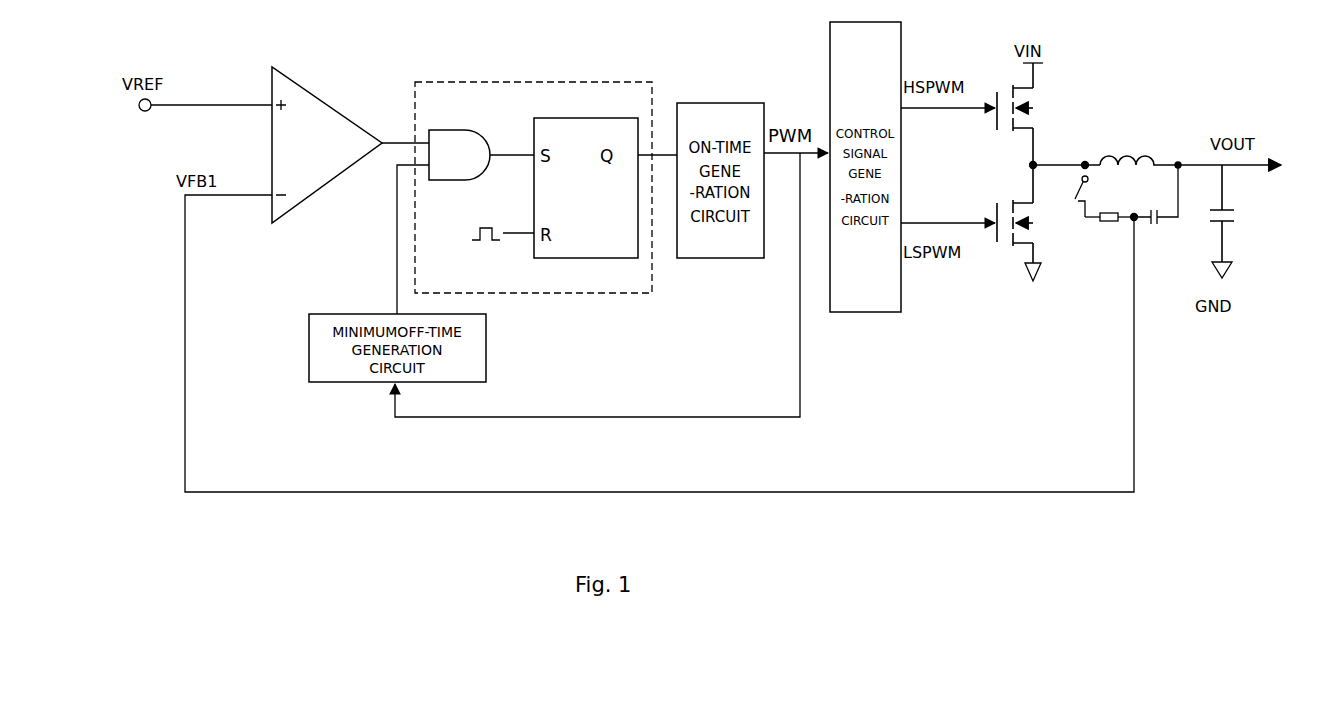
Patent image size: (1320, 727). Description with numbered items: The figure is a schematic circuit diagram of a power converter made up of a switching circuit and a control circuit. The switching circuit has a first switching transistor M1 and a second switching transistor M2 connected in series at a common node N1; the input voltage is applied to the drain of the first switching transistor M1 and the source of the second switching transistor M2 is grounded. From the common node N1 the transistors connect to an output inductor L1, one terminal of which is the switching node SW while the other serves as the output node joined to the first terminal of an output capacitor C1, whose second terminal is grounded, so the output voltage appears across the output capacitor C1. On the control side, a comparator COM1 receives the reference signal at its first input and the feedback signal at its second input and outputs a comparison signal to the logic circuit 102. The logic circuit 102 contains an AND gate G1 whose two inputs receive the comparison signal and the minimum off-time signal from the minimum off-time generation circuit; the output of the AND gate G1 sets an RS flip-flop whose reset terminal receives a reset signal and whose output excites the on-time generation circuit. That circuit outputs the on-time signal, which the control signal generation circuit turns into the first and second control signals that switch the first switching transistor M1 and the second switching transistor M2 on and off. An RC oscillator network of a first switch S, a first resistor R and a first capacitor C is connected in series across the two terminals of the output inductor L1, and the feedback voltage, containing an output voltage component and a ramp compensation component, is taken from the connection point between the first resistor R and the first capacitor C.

The logic circuit 102 is at (598, 82).
The comparator COM1 is at (327, 145).
The AND gate G1 is at (459, 155).
The first switching transistor M1 is at (1029, 114).
The second switching transistor M2 is at (1029, 214).
The common node N1 is at (1016, 166).
The switching node SW is at (1074, 155).
The output inductor L1 is at (1139, 147).
The output capacitor C1 is at (1237, 221).
The first switch S is at (1073, 196).
The first resistor R is at (1109, 232).
The first capacitor C is at (1156, 206).